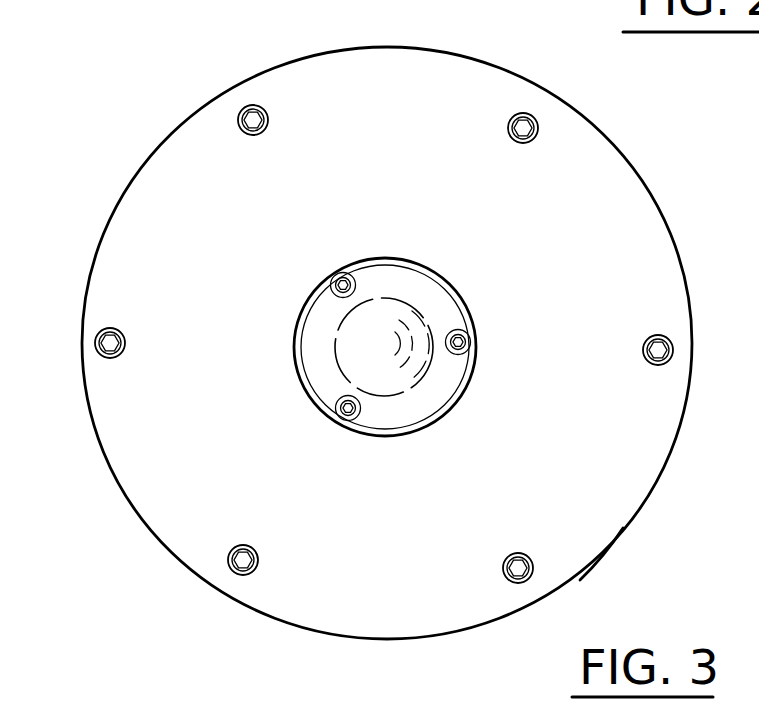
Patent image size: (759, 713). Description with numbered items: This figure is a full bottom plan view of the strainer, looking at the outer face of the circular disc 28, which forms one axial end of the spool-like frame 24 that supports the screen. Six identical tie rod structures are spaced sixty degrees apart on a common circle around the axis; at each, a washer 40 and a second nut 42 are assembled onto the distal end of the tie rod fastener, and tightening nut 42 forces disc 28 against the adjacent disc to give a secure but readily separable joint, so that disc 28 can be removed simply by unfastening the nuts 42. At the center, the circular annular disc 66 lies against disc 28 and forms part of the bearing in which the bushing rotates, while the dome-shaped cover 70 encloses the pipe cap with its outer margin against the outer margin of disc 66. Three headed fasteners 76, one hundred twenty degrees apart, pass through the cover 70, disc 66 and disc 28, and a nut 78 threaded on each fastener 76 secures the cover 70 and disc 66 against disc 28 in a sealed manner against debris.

The spool-like frame 24 is at (656, 202).
The circular disc 28 is at (608, 528).
The washer 40 is at (270, 112).
The second nut 42 is at (243, 110).
The circular annular disc 66 is at (470, 357).
The dome-shaped cover 70 is at (437, 396).
The headed fastener 76 is at (344, 278).
The nut 78 is at (333, 292).